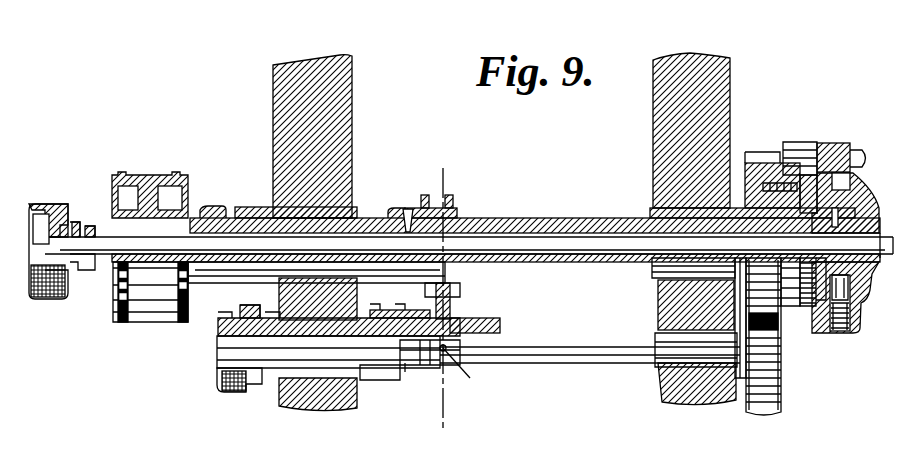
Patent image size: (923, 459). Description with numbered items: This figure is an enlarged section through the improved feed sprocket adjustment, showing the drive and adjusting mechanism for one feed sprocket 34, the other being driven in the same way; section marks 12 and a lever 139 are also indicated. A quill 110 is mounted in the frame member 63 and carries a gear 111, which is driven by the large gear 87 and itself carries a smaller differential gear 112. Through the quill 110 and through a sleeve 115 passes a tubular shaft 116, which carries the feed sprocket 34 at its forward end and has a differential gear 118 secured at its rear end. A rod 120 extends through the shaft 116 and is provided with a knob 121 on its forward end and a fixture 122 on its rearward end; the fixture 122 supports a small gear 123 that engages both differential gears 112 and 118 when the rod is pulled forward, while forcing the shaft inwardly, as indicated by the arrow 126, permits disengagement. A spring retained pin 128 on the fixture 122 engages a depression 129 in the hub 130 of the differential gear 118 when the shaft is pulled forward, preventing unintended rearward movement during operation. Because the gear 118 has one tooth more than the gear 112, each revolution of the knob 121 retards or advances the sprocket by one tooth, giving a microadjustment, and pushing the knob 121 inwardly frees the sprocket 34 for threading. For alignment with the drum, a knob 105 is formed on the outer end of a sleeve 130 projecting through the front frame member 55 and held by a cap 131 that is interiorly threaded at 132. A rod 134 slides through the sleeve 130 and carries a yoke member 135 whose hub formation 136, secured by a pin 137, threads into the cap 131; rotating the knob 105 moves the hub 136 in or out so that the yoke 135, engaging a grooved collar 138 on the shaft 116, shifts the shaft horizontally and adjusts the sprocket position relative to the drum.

The section line 12 is at (465, 183).
The feed sprocket 34 is at (162, 152).
The front frame member 55 is at (338, 121).
The frame member 63 is at (713, 88).
The large gear 87 is at (772, 382).
The knob 105 is at (226, 384).
The quill 110 is at (656, 214).
The gear 111 is at (741, 208).
The differential gear 112 is at (788, 306).
The sleeve 115 is at (263, 207).
The tubular shaft 116 is at (541, 218).
The differential gear 118 is at (832, 323).
The rod 120 is at (565, 243).
The knob 121 is at (46, 296).
The fixture 122 is at (864, 214).
The small gear 123 is at (797, 144).
The arrow 126 is at (80, 184).
The spring retained pin 128 is at (850, 295).
The depression 129 is at (858, 265).
The sleeve 130 is at (842, 197).
The cap 131 is at (372, 382).
The interior threads 132 is at (411, 310).
The rod 134 is at (549, 350).
The yoke member 135 is at (451, 317).
The hub formation 136 is at (490, 324).
The pin 137 is at (466, 378).
The grooved collar 138 is at (415, 208).
The lever 139 is at (425, 378).